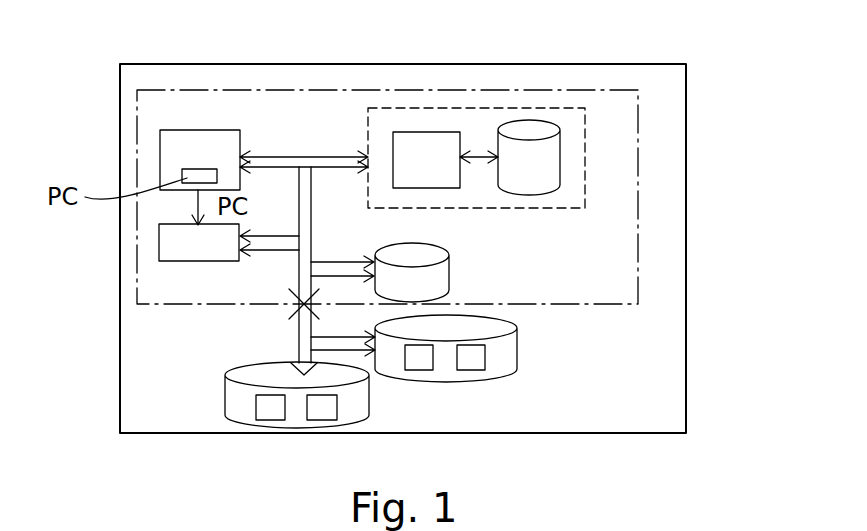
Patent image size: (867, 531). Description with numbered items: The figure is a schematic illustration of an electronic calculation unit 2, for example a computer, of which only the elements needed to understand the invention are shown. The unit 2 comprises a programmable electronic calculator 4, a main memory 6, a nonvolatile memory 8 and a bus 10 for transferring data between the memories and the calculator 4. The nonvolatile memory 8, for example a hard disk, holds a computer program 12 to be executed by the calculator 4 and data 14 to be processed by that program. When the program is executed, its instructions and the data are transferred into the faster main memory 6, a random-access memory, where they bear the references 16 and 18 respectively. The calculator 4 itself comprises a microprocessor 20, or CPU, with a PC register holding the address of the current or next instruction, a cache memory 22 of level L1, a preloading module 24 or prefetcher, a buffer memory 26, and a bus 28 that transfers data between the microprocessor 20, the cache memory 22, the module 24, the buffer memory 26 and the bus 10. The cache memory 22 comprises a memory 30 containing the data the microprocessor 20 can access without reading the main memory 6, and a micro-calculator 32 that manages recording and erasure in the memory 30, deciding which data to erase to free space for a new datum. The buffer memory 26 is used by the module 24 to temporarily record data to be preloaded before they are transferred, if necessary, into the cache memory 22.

The electronic calculation unit 2 is at (687, 73).
The programmable electronic calculator 4 is at (639, 150).
The main memory 6 is at (572, 375).
The nonvolatile memory 8 is at (274, 420).
The bus 10 is at (305, 325).
The computer program 12 is at (270, 408).
The data 14 is at (322, 408).
The instructions of the program 16 is at (422, 363).
The data processed by the program 18 is at (520, 352).
The microprocessor 20 is at (200, 160).
The cache memory 22 is at (457, 107).
The preloading module 24 is at (199, 242).
The buffer memory 26 is at (412, 272).
The bus 28 is at (303, 217).
The memory 30 is at (538, 122).
The micro-calculator 32 is at (426, 160).